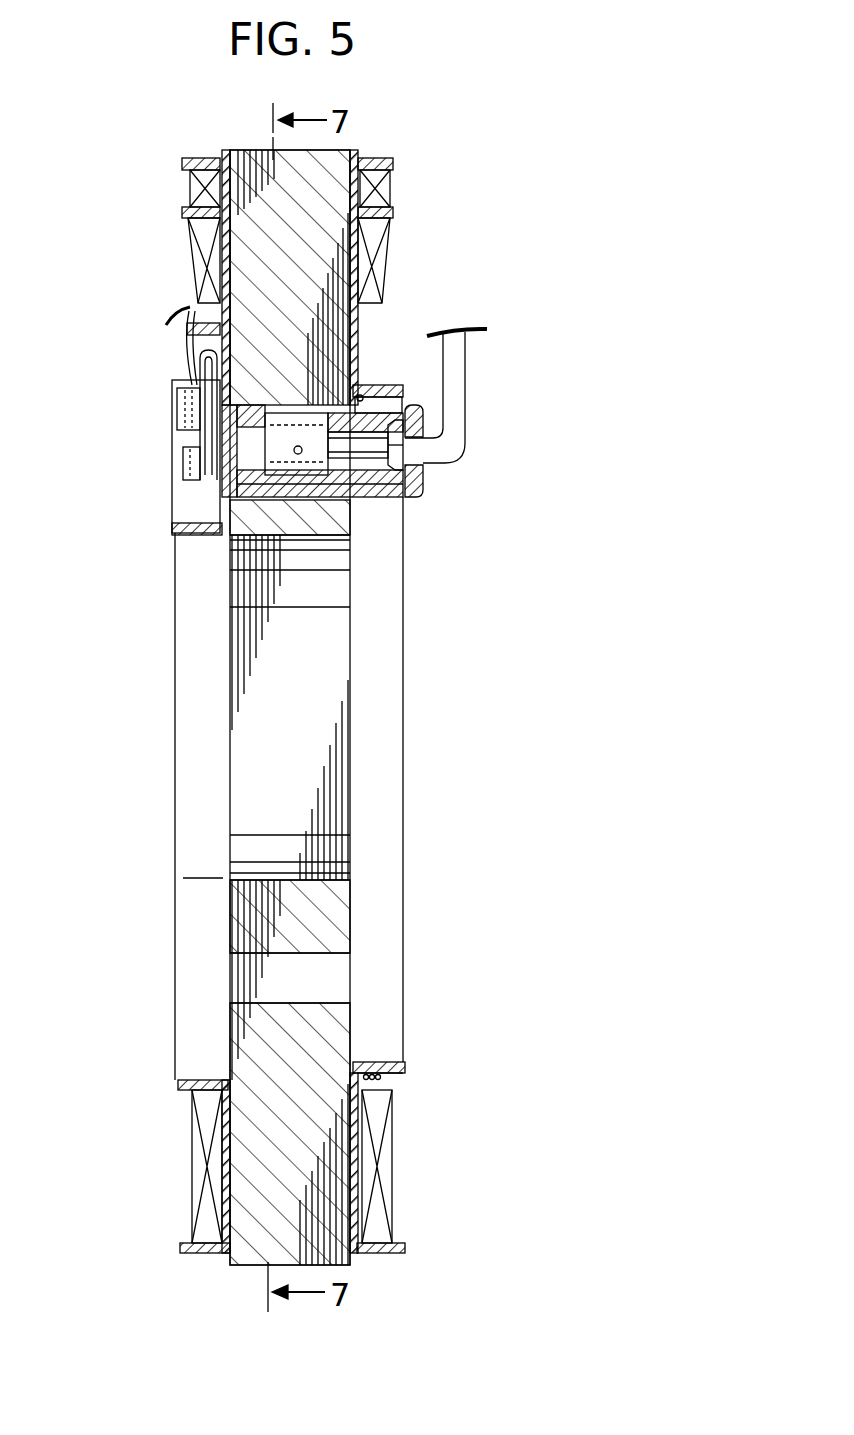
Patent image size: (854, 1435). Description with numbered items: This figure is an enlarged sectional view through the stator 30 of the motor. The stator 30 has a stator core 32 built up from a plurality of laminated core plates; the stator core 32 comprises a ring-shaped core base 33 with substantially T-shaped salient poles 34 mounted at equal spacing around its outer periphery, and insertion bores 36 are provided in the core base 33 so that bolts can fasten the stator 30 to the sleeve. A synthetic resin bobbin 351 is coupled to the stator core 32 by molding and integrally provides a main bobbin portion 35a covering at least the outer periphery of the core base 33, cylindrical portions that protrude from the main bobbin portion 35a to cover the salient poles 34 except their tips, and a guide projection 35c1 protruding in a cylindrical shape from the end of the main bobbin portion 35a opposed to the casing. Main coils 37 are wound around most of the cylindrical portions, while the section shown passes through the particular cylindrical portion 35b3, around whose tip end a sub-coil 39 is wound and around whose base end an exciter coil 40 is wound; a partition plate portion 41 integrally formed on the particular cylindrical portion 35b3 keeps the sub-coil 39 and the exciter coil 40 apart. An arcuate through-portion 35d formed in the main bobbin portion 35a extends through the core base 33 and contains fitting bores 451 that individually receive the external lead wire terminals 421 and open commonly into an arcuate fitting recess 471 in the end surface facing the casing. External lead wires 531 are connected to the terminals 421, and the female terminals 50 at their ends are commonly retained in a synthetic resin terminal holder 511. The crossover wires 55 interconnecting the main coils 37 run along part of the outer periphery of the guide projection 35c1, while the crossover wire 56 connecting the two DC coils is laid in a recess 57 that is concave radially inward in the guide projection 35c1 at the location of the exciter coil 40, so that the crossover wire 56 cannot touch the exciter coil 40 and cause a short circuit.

The stator 30 is at (165, 1058).
The stator core 32 is at (362, 535).
The core base 33 is at (333, 922).
The salient pole 34 is at (330, 160).
The main bobbin portion 35a is at (222, 540).
The particular cylindrical portion 35b3 is at (218, 250).
The guide projection 35c1 is at (405, 392).
The through-portion 35d is at (305, 408).
The bobbin 351 is at (415, 1080).
The insertion bore 36 is at (320, 1003).
The main coil 37 is at (385, 1165).
The sub-coil 39 is at (380, 190).
The exciter coil 40 is at (378, 252).
The partition plate portion 41 is at (182, 212).
The external lead wire terminal 421 is at (165, 398).
The fitting bore 451 is at (233, 463).
The fitting recess 471 is at (290, 497).
The female terminal 50 is at (258, 535).
The terminal holder 511 is at (425, 487).
The external lead wire 531 is at (447, 430).
The crossover wire 55 is at (395, 1062).
The crossover wire 56 is at (360, 395).
The recess 57 is at (366, 400).